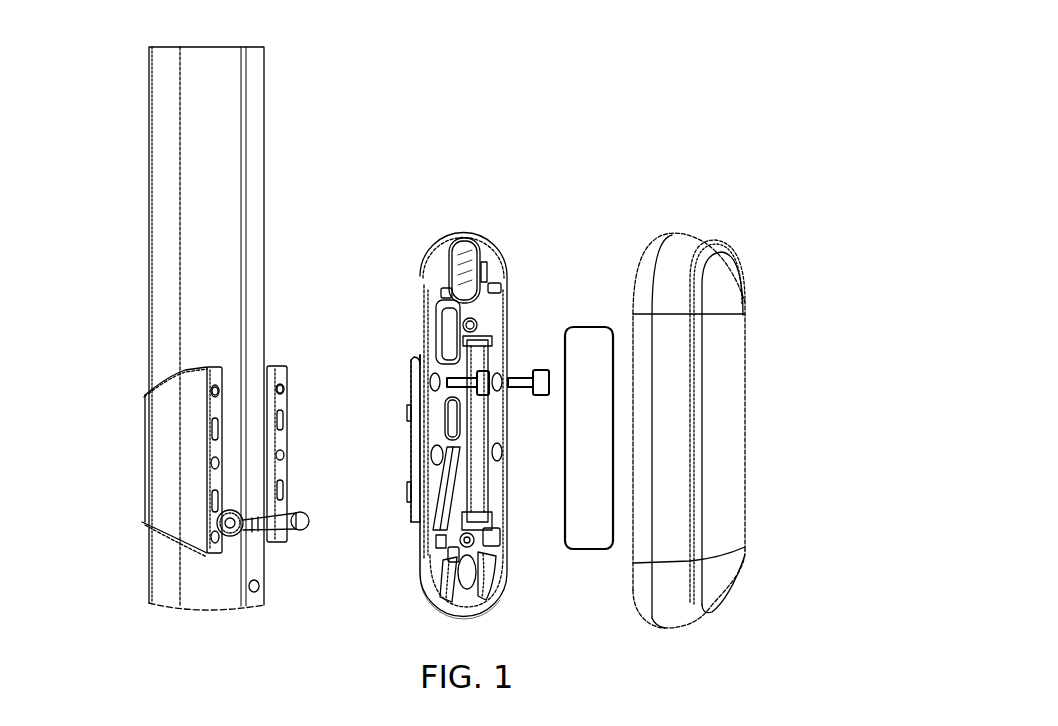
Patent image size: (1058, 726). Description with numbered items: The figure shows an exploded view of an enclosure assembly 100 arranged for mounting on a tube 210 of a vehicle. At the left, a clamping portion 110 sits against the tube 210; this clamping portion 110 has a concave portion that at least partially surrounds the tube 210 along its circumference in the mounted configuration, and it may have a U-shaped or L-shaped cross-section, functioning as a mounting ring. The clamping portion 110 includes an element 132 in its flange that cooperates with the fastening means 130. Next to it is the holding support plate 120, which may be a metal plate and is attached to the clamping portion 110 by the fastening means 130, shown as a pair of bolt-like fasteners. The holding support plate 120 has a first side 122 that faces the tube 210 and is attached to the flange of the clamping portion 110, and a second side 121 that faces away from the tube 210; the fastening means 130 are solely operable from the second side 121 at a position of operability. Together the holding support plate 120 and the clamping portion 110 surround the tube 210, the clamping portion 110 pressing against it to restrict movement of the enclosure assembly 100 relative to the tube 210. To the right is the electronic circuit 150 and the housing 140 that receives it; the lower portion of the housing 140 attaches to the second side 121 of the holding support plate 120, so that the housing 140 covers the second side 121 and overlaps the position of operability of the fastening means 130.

The enclosure assembly 100 is at (690, 150).
The clamping portion 110 is at (177, 418).
The holding support plate 120 is at (444, 253).
The second side 121 is at (477, 600).
The first side 122 is at (420, 562).
The fastening means 130 is at (483, 373).
The element 132 is at (215, 391).
The housing 140 is at (686, 250).
The electronic circuit 150 is at (592, 333).
The tube 210 is at (187, 222).